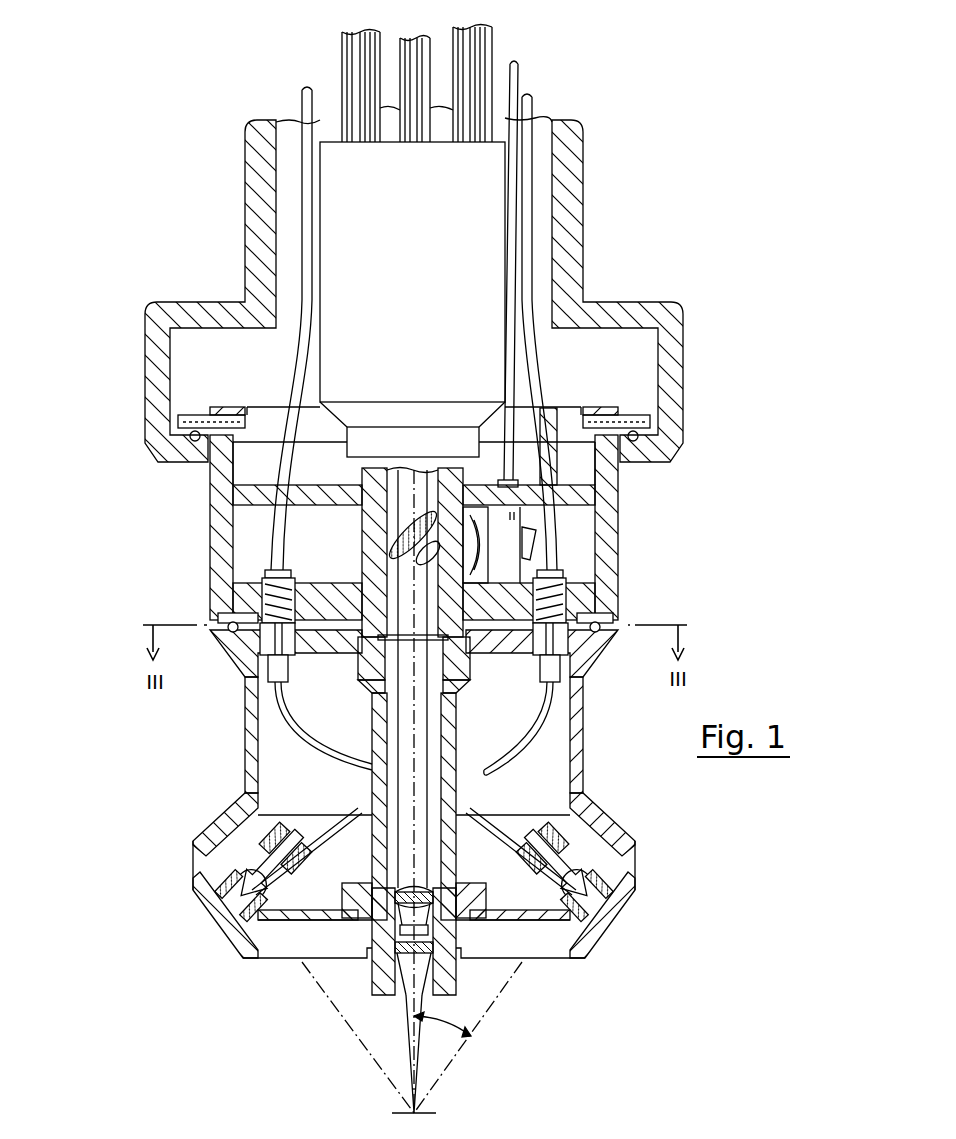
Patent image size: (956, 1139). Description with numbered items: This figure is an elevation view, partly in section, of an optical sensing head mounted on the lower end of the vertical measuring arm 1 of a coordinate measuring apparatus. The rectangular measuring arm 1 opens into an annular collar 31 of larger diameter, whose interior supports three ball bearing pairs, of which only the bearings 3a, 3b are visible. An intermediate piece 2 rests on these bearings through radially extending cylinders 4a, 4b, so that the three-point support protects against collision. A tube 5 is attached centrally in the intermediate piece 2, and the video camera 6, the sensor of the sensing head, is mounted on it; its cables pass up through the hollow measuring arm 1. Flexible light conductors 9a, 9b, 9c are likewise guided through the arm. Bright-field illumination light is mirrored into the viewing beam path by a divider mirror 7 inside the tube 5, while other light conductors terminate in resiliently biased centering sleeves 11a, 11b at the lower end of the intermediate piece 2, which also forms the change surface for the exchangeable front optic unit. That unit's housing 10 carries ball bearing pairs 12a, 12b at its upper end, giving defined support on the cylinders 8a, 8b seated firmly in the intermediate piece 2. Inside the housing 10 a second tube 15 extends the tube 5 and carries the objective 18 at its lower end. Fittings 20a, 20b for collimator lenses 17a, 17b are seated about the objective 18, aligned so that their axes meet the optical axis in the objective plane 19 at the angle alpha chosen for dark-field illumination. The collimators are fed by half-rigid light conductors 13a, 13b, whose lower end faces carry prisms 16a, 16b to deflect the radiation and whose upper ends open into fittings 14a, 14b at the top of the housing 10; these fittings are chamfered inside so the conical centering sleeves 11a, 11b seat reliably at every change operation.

The measuring arm 1 is at (572, 233).
The intermediate piece 2 is at (612, 523).
The ball bearing 3a is at (657, 467).
The ball bearing 3b is at (195, 441).
The cylinder 4a is at (633, 420).
The cylinder 4b is at (190, 428).
The tube 5 is at (363, 570).
The video camera 6 is at (404, 264).
The divider mirror 7 is at (403, 538).
The cylinder 8a is at (613, 611).
The cylinder 8b is at (227, 611).
The light conductor 9a is at (540, 397).
The light conductor 9b is at (290, 397).
The light conductor 9c is at (517, 368).
The housing 10 is at (584, 752).
The centering sleeve 11a is at (572, 612).
The centering sleeve 11b is at (267, 613).
The ball bearing pair 12a is at (607, 632).
The ball bearing pair 12b is at (230, 630).
The light conductor 13a is at (510, 752).
The light conductor 13b is at (293, 727).
The fitting 14a is at (542, 650).
The fitting 14b is at (290, 660).
The second tube 15 is at (383, 787).
The prism 16a is at (575, 877).
The prism 16b is at (243, 887).
The collimator lens 17a is at (610, 910).
The collimator lens 17b is at (257, 923).
The objective 18 is at (388, 975).
The objective plane 19 is at (418, 1113).
The fitting 20a is at (582, 855).
The fitting 20b is at (243, 837).
The annular collar 31 is at (675, 407).